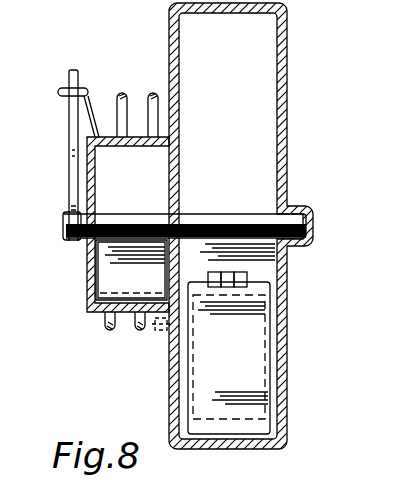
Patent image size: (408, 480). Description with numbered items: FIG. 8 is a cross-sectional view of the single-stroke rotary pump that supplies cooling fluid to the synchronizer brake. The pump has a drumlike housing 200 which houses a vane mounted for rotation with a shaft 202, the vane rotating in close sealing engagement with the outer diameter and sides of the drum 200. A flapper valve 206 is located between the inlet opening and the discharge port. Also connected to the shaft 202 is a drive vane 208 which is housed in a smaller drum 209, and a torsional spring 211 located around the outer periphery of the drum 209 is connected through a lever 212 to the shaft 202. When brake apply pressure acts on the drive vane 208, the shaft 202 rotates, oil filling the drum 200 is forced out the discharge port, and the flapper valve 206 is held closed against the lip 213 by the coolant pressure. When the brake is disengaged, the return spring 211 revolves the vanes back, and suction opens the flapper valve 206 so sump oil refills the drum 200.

The drumlike housing 200 is at (171, 52).
The shaft 202 is at (194, 224).
The flapper valve 206 is at (197, 382).
The drive vane 208 is at (98, 291).
The smaller drum 209 is at (93, 269).
The torsional spring 211 is at (137, 332).
The lever 212 is at (71, 148).
The lip 213 is at (276, 427).